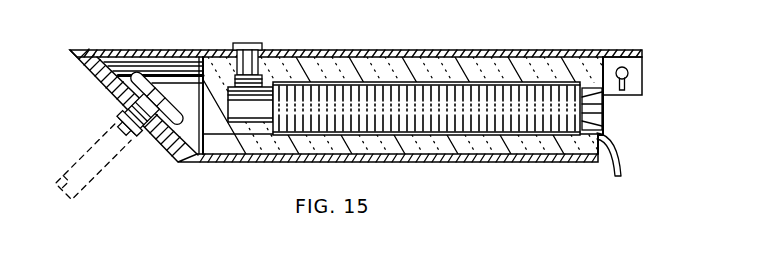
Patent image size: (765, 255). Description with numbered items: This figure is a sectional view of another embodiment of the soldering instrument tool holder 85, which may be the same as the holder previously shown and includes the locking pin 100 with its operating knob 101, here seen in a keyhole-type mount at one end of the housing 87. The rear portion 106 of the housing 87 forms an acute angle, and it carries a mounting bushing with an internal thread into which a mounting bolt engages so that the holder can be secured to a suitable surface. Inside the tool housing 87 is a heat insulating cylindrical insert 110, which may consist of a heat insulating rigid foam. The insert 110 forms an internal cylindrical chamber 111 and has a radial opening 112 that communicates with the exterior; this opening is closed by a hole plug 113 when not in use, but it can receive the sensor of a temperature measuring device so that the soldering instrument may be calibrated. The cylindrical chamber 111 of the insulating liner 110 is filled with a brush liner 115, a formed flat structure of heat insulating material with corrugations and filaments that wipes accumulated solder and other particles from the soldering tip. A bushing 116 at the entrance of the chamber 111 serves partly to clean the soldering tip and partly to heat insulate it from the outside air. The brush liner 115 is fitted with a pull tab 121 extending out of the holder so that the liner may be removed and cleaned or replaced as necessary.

The tool holder 85 is at (377, 38).
The housing 87 is at (134, 50).
The locking pin 100 is at (633, 78).
The operating knob 101 is at (617, 66).
The rear portion 106 is at (97, 80).
The heat insulating cylindrical insert 110 is at (493, 152).
The internal cylindrical chamber 111 is at (565, 143).
The radial opening 112 is at (258, 43).
The hole plug 113 is at (230, 44).
The brush liner 115 is at (490, 100).
The bushing 116 is at (612, 110).
The pull tab 121 is at (623, 158).